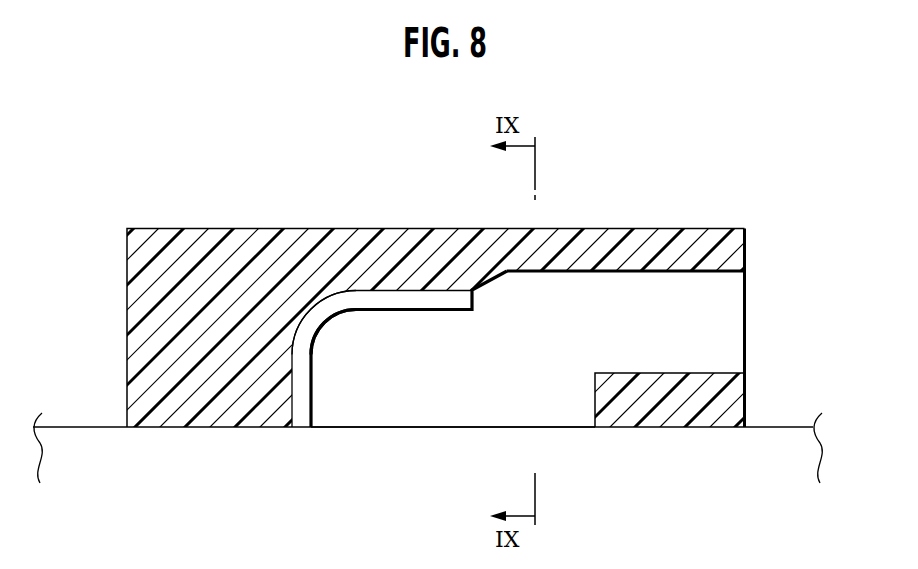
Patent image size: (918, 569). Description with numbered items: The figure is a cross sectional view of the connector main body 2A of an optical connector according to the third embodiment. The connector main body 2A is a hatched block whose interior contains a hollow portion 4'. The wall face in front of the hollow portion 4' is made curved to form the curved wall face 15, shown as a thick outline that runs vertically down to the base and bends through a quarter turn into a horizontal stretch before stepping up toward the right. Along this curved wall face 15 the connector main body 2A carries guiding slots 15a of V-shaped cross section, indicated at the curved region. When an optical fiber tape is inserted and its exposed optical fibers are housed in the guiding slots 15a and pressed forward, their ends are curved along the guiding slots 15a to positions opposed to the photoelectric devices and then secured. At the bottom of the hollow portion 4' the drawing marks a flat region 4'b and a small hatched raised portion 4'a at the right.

The connector main body 2A is at (268, 227).
The curved wall face 15 is at (427, 310).
The guiding slots 15a is at (318, 308).
The hollow portion 4' is at (427, 440).
The protruding portion of base member 4'a is at (459, 351).
The flat portion of base member 4'b is at (453, 439).